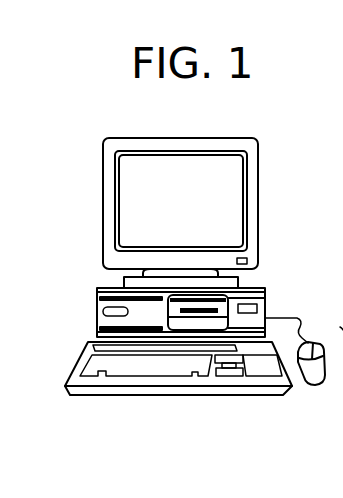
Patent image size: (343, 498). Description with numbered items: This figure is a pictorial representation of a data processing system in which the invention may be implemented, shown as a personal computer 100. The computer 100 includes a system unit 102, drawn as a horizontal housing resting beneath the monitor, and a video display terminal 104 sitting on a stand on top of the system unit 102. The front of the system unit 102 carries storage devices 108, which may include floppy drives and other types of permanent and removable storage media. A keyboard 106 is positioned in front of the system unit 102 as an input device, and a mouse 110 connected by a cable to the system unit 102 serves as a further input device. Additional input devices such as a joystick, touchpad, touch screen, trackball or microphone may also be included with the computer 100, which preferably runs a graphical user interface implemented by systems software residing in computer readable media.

The computer 100 is at (84, 148).
The system unit 102 is at (97, 303).
The video display terminal 104 is at (258, 205).
The keyboard 106 is at (152, 397).
The storage devices 108 is at (232, 301).
The mouse 110 is at (315, 387).